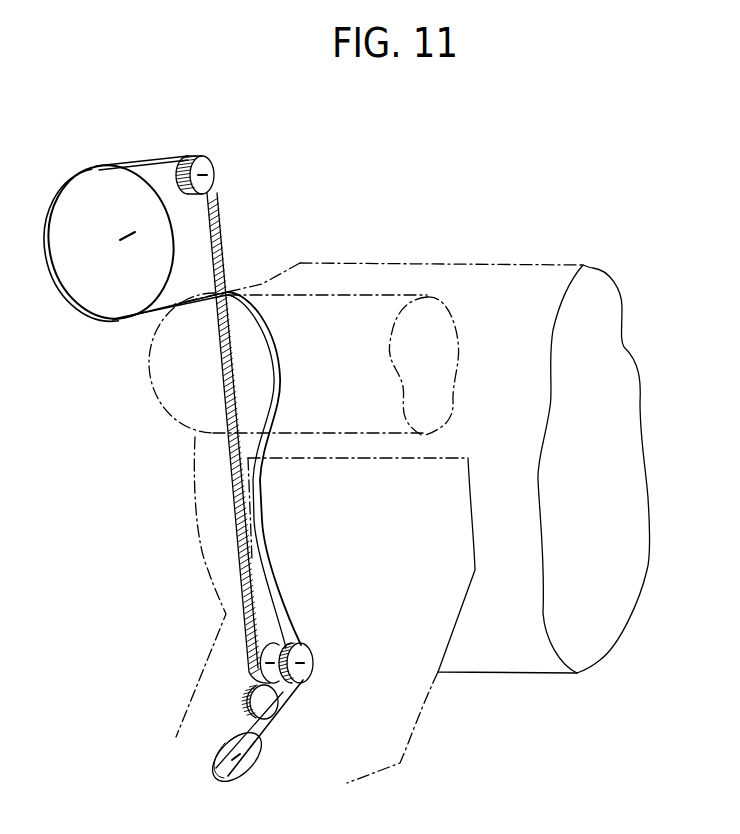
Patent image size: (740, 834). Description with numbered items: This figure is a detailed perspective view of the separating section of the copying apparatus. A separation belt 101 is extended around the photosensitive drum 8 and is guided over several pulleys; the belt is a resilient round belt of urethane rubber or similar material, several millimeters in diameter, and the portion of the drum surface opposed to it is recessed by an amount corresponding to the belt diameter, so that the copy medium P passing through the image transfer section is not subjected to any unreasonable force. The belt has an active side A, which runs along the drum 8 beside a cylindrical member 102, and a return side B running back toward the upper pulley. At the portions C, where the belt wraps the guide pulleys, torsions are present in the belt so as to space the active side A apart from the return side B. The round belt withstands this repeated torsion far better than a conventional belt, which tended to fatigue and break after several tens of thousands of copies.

The separation belt 101 is at (221, 435).
The cylinder 102 is at (336, 295).
The drum 8 is at (527, 672).
The copy medium P is at (440, 676).
The active side of the separation belt A is at (268, 510).
The return side of the belt B is at (222, 513).
The torsion portions C is at (146, 146).